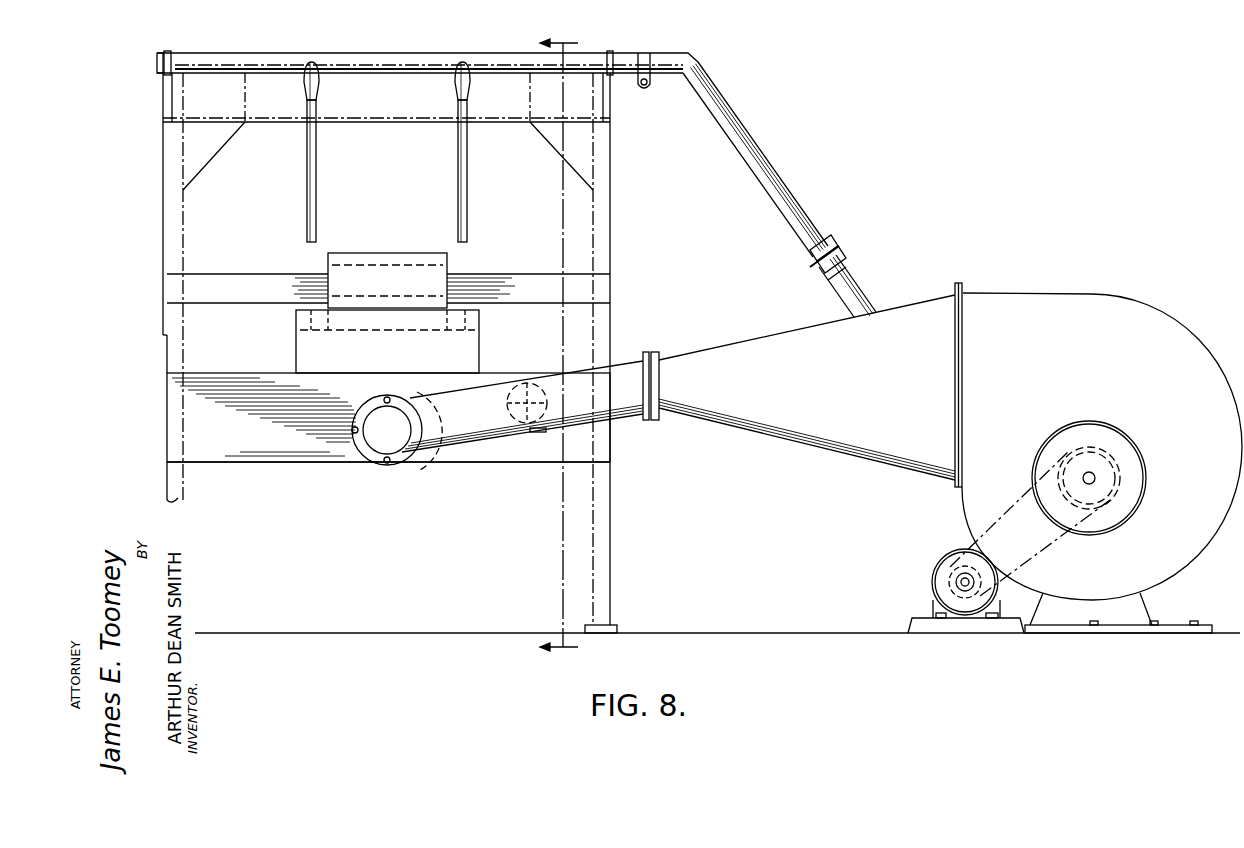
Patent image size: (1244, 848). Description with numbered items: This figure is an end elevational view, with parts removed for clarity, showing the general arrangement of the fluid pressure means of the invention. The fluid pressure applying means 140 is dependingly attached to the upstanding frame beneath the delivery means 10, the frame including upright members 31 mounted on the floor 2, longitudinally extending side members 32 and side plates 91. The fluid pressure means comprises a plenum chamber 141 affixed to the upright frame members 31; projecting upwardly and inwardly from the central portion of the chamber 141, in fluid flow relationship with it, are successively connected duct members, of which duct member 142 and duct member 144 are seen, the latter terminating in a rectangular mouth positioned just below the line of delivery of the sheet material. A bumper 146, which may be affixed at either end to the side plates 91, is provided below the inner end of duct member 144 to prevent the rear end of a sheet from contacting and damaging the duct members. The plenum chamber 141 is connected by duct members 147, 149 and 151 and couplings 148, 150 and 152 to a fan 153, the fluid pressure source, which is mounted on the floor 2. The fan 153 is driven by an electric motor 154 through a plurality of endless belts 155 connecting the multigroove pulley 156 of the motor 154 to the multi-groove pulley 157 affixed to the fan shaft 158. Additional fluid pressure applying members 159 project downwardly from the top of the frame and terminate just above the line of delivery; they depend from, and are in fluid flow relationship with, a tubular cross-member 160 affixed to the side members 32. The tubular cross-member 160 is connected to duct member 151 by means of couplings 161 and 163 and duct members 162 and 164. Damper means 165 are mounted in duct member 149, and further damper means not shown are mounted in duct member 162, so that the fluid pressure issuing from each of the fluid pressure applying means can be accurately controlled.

The floor 2 is at (856, 633).
The delivery means 10 is at (559, 346).
The upright members 31 is at (168, 473).
The side members 32 is at (165, 96).
The side plates 91 is at (166, 180).
The fluid pressure applying means 140 is at (166, 440).
The plenum chamber 141 is at (270, 458).
The duct member 142 is at (480, 346).
The duct member 144 is at (448, 256).
The bumper 146 is at (508, 296).
The duct member 147 is at (414, 466).
The coupling 148 is at (381, 464).
The duct member 149 is at (484, 440).
The coupling 150 is at (648, 421).
The duct member 151 is at (817, 446).
The coupling 152 is at (956, 490).
The fan 153 is at (1091, 297).
The electric motor 154 is at (943, 592).
The endless belts 155 is at (984, 560).
The multigroove pulley 156 is at (955, 572).
The multi-groove pulley 157 is at (1106, 504).
The fan shaft 158 is at (1112, 492).
The fluid pressure applying members 159 is at (317, 165).
The tubular cross-member 160 is at (440, 46).
The coupling 161 is at (646, 53).
The duct member 162 is at (795, 208).
The coupling 163 is at (842, 254).
The duct member 164 is at (867, 307).
The damper means 165 is at (507, 404).